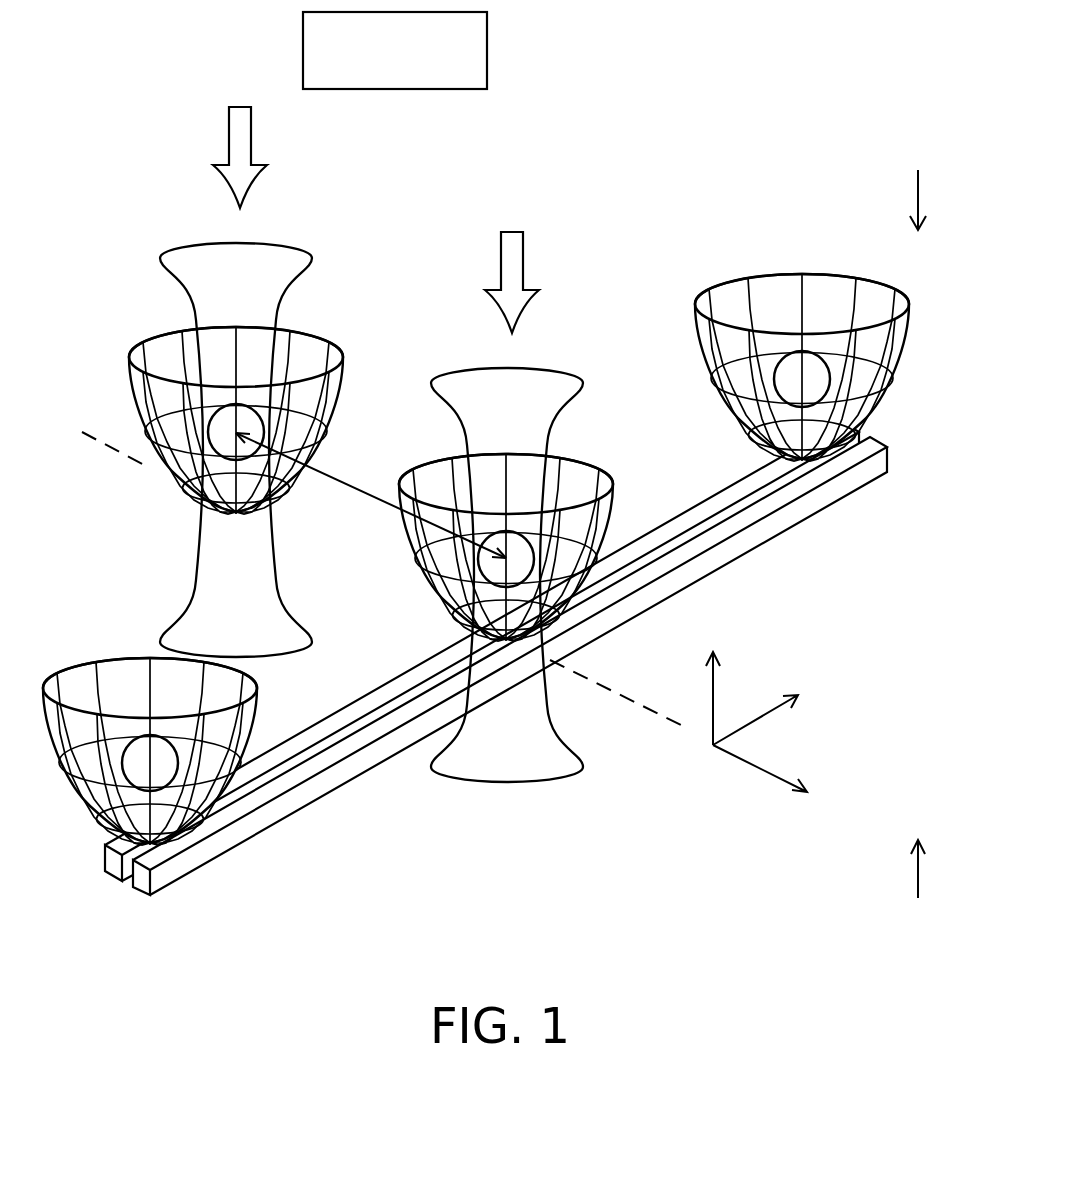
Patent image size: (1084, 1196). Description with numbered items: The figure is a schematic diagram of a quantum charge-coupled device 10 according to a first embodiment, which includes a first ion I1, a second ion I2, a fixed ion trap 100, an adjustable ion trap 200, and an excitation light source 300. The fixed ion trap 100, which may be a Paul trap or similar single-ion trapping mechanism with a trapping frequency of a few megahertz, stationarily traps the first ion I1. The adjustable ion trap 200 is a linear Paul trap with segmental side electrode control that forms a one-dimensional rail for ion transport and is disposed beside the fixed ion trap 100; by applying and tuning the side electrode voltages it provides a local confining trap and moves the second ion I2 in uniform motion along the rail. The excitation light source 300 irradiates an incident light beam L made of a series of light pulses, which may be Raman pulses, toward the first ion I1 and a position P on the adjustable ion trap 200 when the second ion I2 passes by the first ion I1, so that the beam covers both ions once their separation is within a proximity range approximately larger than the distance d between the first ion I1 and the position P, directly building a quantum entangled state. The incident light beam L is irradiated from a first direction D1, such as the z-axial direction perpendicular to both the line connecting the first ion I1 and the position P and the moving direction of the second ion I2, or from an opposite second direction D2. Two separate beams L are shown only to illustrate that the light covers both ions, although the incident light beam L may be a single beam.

The quantum charge-coupled device 10 is at (480, 528).
The fixed ion trap 100 is at (205, 444).
The adjustable ion trap 200 is at (843, 480).
The excitation light source 300 is at (487, 50).
The incident light beam L is at (229, 140).
The first ion I1 is at (143, 401).
The second ion I2 is at (536, 565).
The distance d is at (383, 579).
The position P is at (507, 640).
The first direction D1 is at (931, 200).
The second direction D2 is at (933, 869).